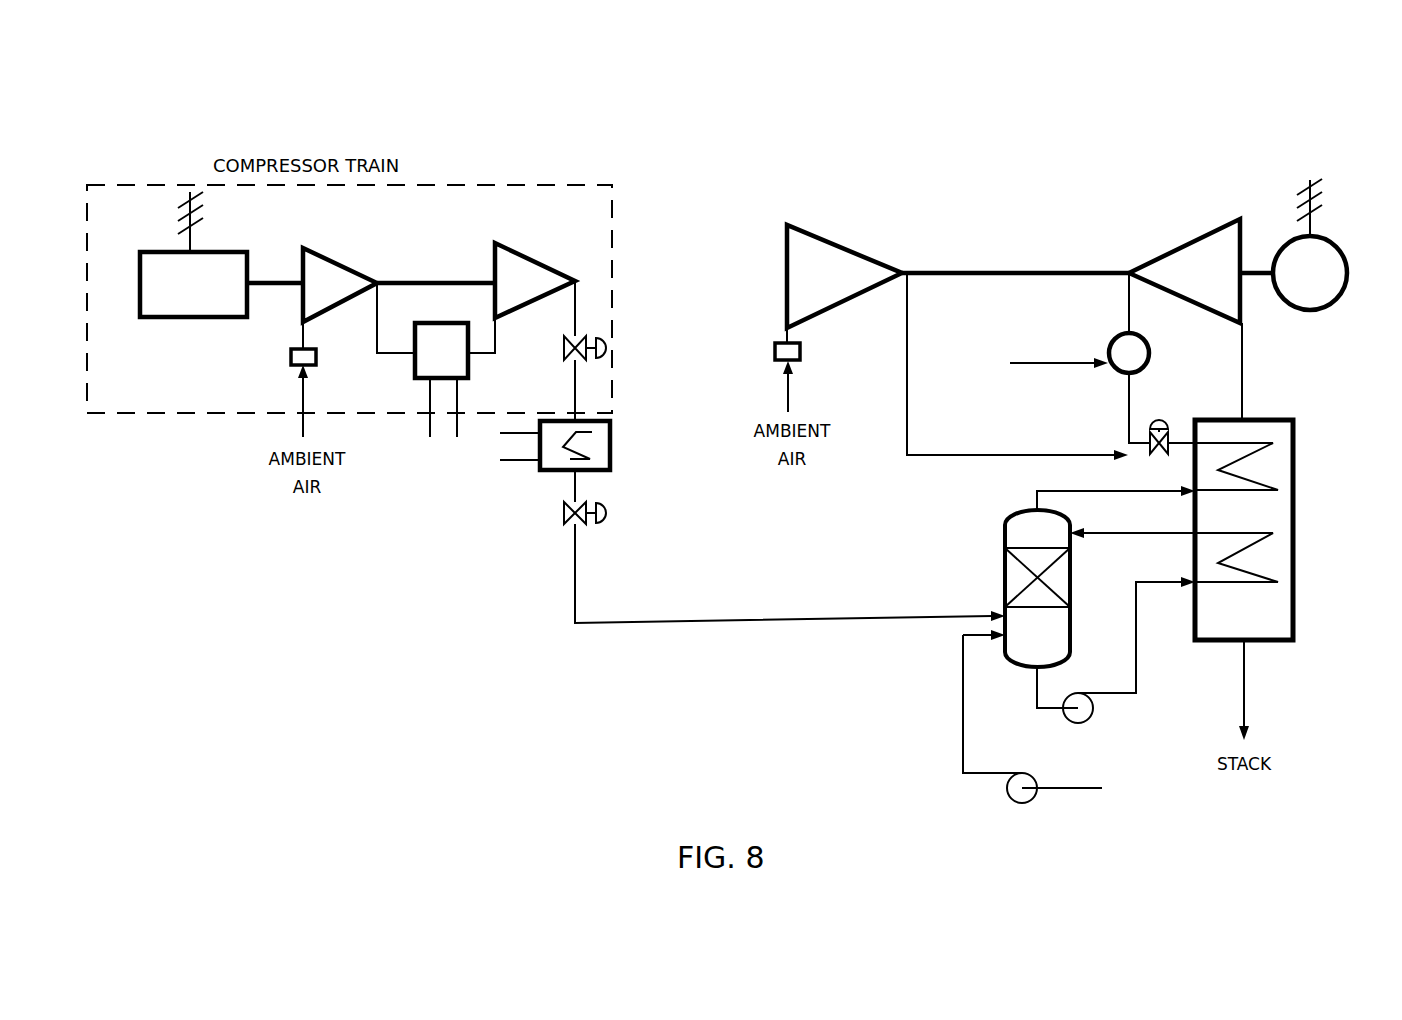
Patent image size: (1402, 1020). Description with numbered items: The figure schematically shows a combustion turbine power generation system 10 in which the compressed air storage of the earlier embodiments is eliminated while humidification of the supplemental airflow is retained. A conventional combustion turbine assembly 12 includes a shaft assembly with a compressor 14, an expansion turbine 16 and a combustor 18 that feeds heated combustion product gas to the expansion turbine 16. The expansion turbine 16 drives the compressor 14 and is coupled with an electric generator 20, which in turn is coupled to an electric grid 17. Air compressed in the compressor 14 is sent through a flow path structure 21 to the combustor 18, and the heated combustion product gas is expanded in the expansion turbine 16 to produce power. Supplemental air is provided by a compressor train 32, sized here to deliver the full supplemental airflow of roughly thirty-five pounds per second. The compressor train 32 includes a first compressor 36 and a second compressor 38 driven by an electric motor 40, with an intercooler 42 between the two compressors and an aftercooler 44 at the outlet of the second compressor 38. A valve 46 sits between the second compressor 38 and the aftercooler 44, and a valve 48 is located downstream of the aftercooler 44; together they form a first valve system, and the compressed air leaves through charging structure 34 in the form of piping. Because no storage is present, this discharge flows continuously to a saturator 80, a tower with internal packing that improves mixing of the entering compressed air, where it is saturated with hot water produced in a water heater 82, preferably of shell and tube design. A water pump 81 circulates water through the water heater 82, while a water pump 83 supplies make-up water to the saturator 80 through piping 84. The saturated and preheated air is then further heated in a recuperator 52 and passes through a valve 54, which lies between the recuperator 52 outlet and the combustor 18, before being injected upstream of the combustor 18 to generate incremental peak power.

The combustion turbine power generation system 10 is at (733, 142).
The combustion turbine assembly 12 is at (1016, 242).
The compressor 14 is at (828, 263).
The expansion turbine 16 is at (1183, 275).
The electric grid 17 is at (165, 222).
The combustor 18 is at (1110, 372).
The electric generator 20 is at (1333, 273).
The flow path structure 21 is at (917, 413).
The compressor train 32 is at (587, 218).
The charging structure 34 is at (590, 570).
The first compressor 36 is at (333, 272).
The second compressor 38 is at (508, 270).
The electric motor 40 is at (178, 324).
The intercooler 42 is at (410, 360).
The aftercooler 44 is at (600, 449).
The valve 46 is at (613, 348).
The valve 48 is at (608, 514).
The recuperator 52 is at (1270, 461).
The valve 54 is at (1165, 405).
The saturator 80 is at (1000, 543).
The water pump 81 is at (1094, 714).
The water heater 82 is at (1270, 566).
The water pump 83 is at (1038, 767).
The piping 84 is at (958, 710).